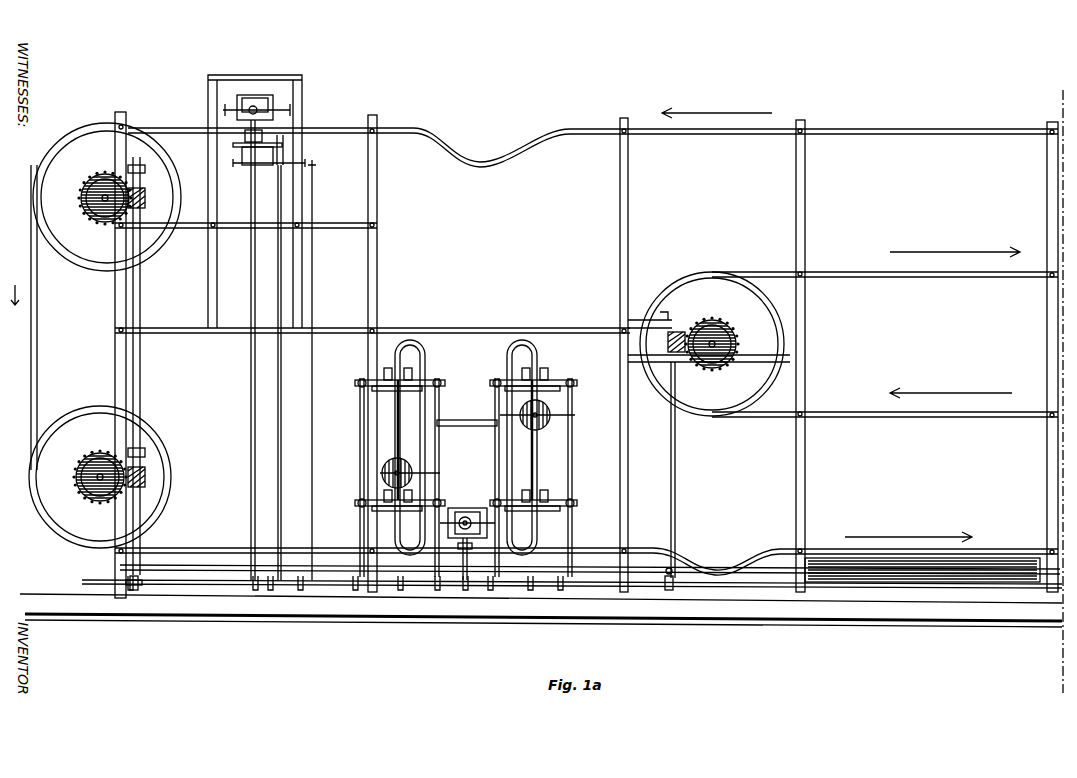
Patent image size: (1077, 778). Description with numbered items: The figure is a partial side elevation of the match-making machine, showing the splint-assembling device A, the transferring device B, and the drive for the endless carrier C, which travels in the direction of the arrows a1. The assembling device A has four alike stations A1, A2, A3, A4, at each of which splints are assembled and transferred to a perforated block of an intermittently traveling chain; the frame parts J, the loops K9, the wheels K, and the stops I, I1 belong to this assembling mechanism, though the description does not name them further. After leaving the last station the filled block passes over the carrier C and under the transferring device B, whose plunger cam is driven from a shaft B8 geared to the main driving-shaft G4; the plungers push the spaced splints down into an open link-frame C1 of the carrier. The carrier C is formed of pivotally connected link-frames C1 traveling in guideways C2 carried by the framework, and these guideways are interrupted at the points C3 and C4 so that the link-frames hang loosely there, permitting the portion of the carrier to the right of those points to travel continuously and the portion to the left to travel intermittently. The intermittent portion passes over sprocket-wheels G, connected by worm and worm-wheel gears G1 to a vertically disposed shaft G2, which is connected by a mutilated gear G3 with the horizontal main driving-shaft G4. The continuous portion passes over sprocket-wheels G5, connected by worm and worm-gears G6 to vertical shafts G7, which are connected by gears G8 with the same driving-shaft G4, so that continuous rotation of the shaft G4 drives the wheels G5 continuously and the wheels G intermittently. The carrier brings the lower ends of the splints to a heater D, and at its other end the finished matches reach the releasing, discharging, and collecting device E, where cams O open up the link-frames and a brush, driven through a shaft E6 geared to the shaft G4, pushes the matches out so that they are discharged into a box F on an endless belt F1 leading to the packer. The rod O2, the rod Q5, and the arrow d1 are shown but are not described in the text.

The sprocket-wheels G is at (60, 184).
The worm and worm-wheel gears G1 is at (108, 178).
The vertically-disposed shaft G2 is at (140, 373).
The mutilated gear G3 is at (135, 587).
The main driving-shaft G4 is at (230, 588).
The sprocket-wheels G5 is at (712, 290).
The worm and worm-gears G6 is at (682, 330).
The vertical shafts G7 is at (676, 490).
The gears G8 is at (669, 591).
The endless carrier C is at (36, 370).
The link-frames C1 is at (1033, 277).
The guideways C2 is at (848, 418).
The interruption point C3 is at (702, 558).
The interruption point C4 is at (486, 160).
The releasing, discharging, and collecting device E is at (273, 107).
The shaft E6 is at (255, 293).
The box F is at (275, 153).
The endless belt F1 is at (266, 178).
The cams O is at (240, 133).
The rod O2 is at (283, 424).
The rod Q5 is at (312, 293).
The splint-assembling device A is at (466, 433).
The station A1 is at (525, 500).
The station A2 is at (545, 368).
The station A3 is at (380, 371).
The station A4 is at (385, 493).
The transferring device B is at (470, 510).
The shaft B8 is at (461, 552).
The stop I is at (388, 368).
The stop I1 is at (410, 362).
The standard J is at (360, 445).
The flywheel K is at (401, 466).
The guide loop K9 is at (395, 528).
The heater D is at (945, 566).
The arrows a1 is at (841, 318).
The direction of travel d1 is at (10, 293).